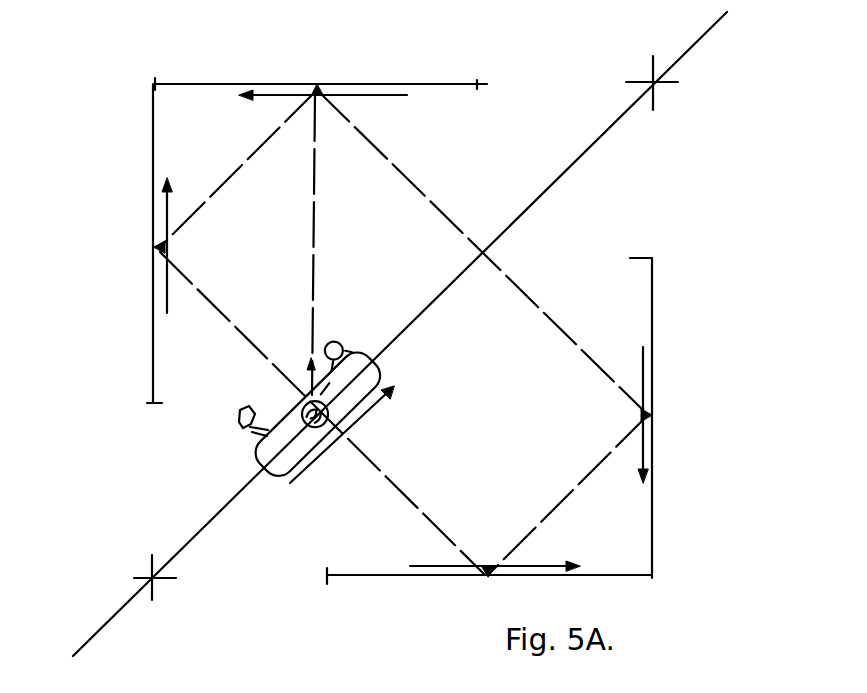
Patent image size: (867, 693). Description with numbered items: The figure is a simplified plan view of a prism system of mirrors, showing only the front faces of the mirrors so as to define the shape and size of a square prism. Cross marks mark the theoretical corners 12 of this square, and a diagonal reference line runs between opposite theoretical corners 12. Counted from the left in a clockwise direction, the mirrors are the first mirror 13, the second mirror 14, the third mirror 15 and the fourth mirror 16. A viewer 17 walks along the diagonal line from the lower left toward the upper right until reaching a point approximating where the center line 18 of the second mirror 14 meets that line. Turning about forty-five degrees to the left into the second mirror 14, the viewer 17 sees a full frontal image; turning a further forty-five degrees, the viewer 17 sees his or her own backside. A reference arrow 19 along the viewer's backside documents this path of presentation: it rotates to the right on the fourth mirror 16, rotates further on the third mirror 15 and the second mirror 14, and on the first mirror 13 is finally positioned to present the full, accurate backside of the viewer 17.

The theoretical corners 12 is at (660, 90).
The first mirror 13 is at (152, 353).
The second mirror 14 is at (206, 83).
The third mirror 15 is at (655, 305).
The fourth mirror 16 is at (395, 578).
The viewer 17 is at (270, 457).
The center line 18 is at (316, 232).
The reference arrow 19 is at (380, 96).